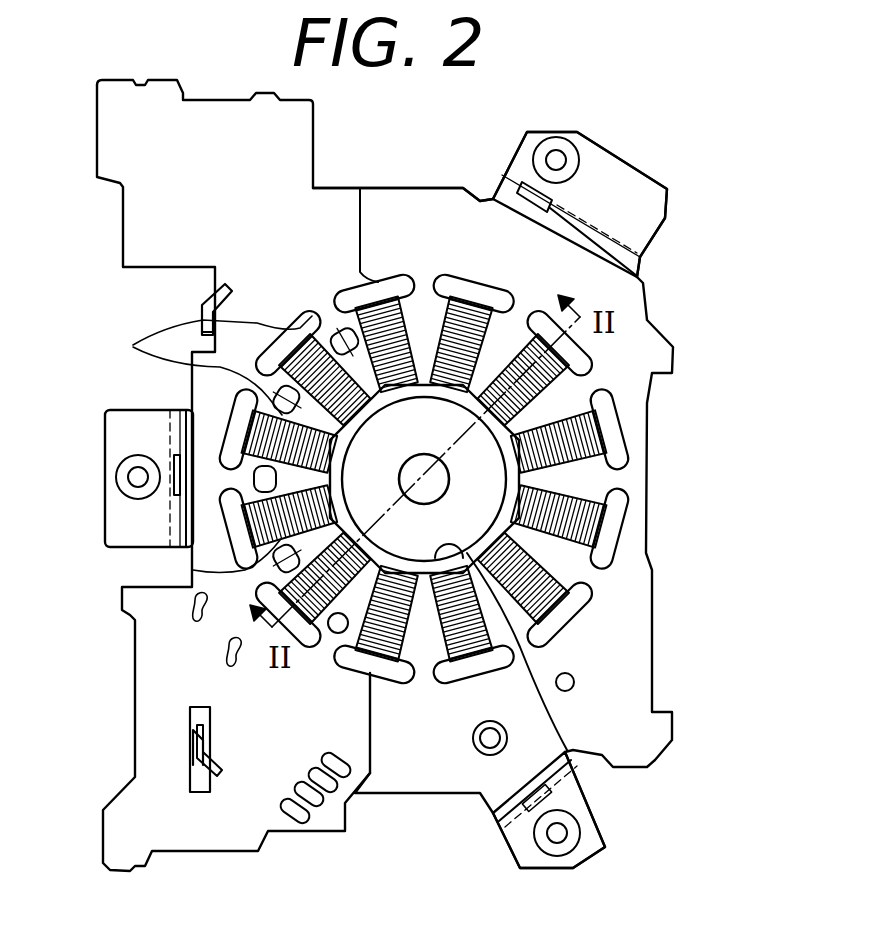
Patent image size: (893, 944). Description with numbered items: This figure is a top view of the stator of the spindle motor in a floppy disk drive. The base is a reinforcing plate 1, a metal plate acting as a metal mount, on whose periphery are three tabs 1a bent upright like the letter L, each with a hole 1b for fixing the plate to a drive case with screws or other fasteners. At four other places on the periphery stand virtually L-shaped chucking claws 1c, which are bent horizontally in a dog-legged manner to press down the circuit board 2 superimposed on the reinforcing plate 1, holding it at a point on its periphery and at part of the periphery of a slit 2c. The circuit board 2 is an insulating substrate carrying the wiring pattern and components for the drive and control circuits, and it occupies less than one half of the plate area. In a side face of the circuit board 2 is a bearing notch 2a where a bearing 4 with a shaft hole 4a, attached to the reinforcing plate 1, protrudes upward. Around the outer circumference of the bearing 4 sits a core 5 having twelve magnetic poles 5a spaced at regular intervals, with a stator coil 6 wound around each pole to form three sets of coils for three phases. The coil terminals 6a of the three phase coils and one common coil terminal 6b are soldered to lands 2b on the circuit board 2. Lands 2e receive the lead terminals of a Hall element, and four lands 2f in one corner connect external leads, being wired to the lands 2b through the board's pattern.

The reinforcing plate 1 is at (462, 200).
The tabs 1a is at (618, 178).
The hole 1b is at (554, 158).
The chucking claws 1c is at (208, 301).
The circuit board 2 is at (252, 160).
The bearing notch 2a is at (568, 752).
The lands 2b is at (203, 444).
The slit 2c is at (200, 787).
The lands 2e is at (214, 648).
The lands 2f is at (348, 775).
The bearing 4 is at (472, 502).
The shaft hole 4a is at (445, 457).
The core 5 is at (490, 548).
The magnetic poles 5a is at (240, 417).
The stator coil 6 is at (465, 327).
The coil terminals 6a is at (318, 477).
The common coil terminal 6b is at (352, 338).